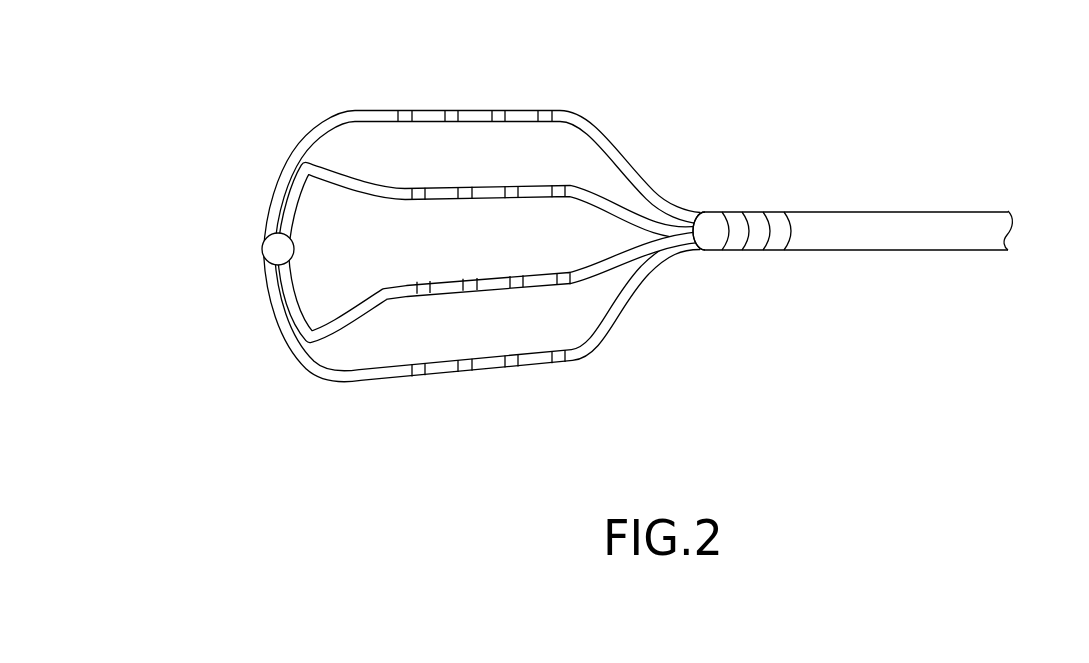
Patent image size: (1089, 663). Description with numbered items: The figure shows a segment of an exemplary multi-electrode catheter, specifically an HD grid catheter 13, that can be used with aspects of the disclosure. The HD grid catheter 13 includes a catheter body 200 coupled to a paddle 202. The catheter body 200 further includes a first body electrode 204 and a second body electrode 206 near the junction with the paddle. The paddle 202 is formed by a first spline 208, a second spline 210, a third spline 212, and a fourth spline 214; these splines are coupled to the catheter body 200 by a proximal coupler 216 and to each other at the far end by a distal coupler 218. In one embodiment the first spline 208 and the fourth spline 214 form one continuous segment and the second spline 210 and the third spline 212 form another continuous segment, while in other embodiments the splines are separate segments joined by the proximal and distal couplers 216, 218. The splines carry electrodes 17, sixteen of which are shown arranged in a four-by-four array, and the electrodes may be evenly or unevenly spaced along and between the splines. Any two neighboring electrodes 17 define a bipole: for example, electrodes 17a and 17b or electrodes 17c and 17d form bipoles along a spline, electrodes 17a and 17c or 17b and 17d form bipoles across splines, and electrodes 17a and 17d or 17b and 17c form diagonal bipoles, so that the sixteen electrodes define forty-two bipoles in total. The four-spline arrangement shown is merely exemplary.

The HD grid catheter 13 is at (619, 233).
The paddle 202 is at (435, 233).
The first spline 208 is at (580, 119).
The second spline 210 is at (350, 181).
The third spline 212 is at (333, 322).
The fourth spline 214 is at (383, 373).
The electrodes 17 is at (417, 372).
The electrode 17a is at (404, 110).
The electrode 17b is at (450, 123).
The electrode 17c is at (410, 203).
The electrode 17d is at (463, 203).
The distal coupler 218 is at (284, 245).
The proximal coupler 216 is at (712, 213).
The second body electrode 206 is at (752, 214).
The first body electrode 204 is at (857, 227).
The catheter body 200 is at (983, 242).